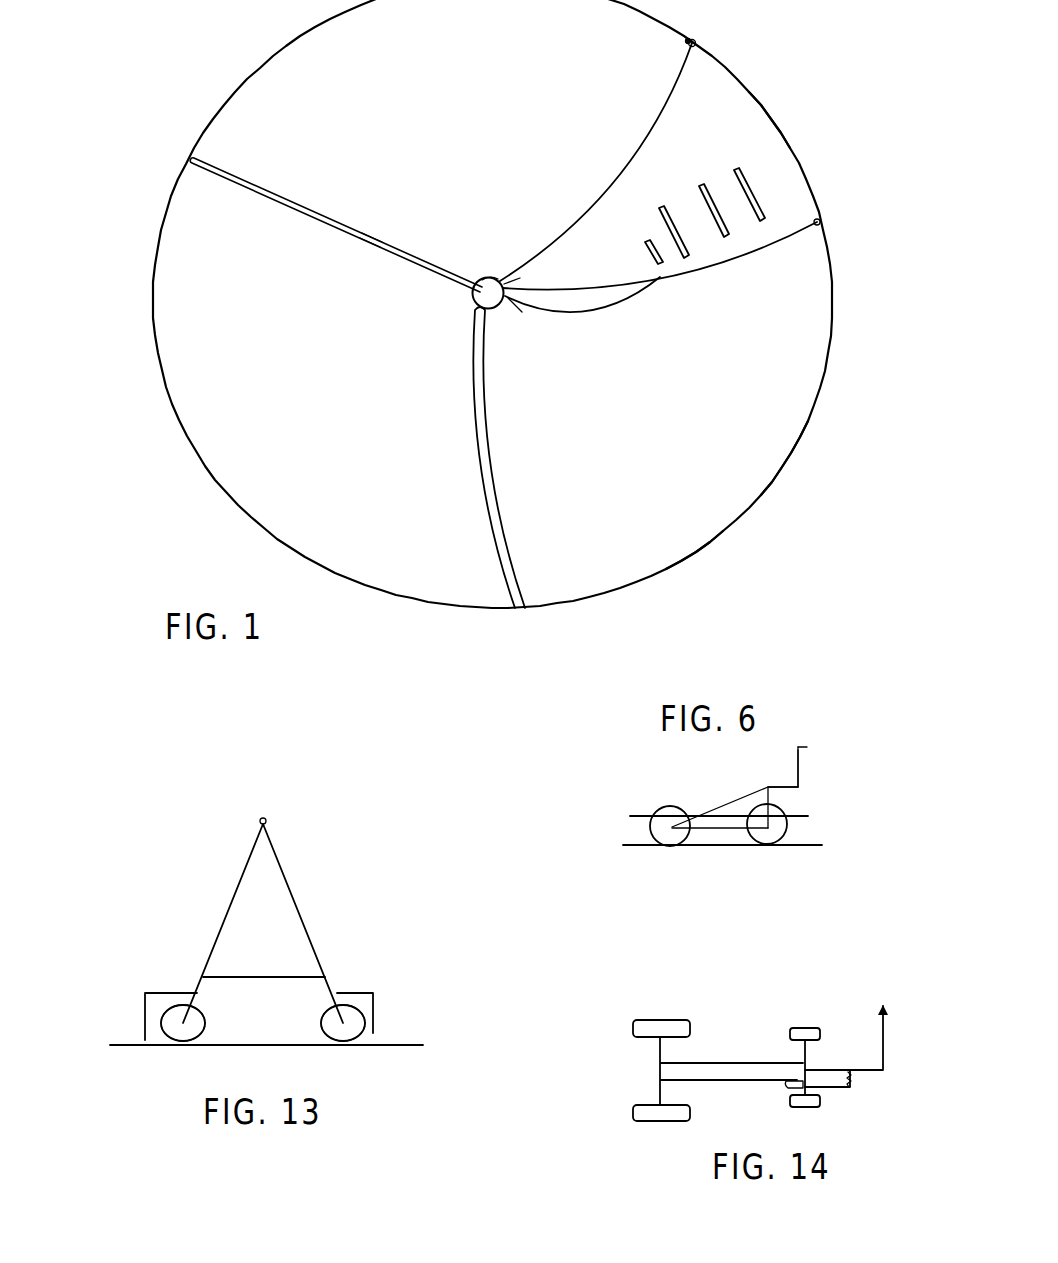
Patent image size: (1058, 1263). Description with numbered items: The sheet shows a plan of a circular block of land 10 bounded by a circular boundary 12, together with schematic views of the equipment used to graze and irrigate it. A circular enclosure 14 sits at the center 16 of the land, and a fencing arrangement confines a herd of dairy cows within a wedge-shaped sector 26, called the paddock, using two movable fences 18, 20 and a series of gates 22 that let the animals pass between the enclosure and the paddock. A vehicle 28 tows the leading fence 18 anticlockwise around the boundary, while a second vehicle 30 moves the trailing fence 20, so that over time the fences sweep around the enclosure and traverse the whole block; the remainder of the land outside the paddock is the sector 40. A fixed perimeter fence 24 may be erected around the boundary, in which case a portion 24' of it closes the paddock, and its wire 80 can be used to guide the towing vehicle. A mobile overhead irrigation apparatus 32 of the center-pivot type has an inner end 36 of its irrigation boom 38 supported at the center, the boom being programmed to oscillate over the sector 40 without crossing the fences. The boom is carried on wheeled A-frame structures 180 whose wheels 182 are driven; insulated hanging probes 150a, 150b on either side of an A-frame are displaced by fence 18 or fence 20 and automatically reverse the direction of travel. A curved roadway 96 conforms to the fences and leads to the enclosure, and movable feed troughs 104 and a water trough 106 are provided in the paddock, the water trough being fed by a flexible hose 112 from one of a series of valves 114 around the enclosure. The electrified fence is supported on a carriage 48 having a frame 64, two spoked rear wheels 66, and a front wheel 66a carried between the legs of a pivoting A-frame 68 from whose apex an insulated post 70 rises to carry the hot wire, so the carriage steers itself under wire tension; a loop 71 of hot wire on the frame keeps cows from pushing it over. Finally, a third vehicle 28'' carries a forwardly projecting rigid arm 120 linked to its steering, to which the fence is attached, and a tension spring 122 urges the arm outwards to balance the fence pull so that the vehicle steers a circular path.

In FIG. 1, the block of land 10 is at (168, 443).
In FIG. 1, the circular boundary 12 is at (829, 355).
In FIG. 1, the circular enclosure 14 is at (471, 297).
In FIG. 1, the center 16 is at (492, 278).
In FIG. 1, the first movable fence 18 is at (631, 159).
In FIG. 6, the first movable fence 18 is at (807, 743).
In FIG. 13, the first movable fence 18 is at (128, 1024).
In FIG. 14, the first movable fence 18 is at (886, 1038).
In FIG. 1, the second movable fence 20 is at (700, 270).
In FIG. 6, the second movable fence 20 is at (783, 768).
In FIG. 13, the second movable fence 20 is at (263, 1023).
In FIG. 1, the gates 22 is at (520, 278).
In FIG. 1, the fixed perimeter fence 24 is at (795, 462).
In FIG. 1, the portion of the perimeter fence 24' is at (793, 120).
In FIG. 1, the sector (paddock) 26 is at (724, 156).
In FIG. 1, the vehicle 28 is at (717, 34).
In FIG. 14, the vehicle 28'' is at (726, 1053).
In FIG. 1, the second vehicle 30 is at (821, 222).
In FIG. 1, the mobile overhead irrigation apparatus 32 is at (370, 248).
In FIG. 1, the inner end of irrigation boom 36 is at (478, 283).
In FIG. 1, the irrigation boom 38 is at (370, 238).
In FIG. 1, the sector 40 is at (655, 426).
In FIG. 6, the carriage 48 is at (658, 856).
In FIG. 6, the frame 64 is at (717, 830).
In FIG. 6, the spoked wheels 66 is at (653, 826).
In FIG. 6, the front wheel 66a is at (778, 833).
In FIG. 6, the A-frame 68 is at (790, 788).
In FIG. 6, the post 70 is at (798, 771).
In FIG. 6, the loop of hot wire 71 is at (640, 816).
In FIG. 1, the wire 80 is at (692, 556).
In FIG. 1, the roadway 96 is at (490, 466).
In FIG. 1, the movable feed troughs 104 is at (749, 190).
In FIG. 1, the water trough 106 is at (650, 243).
In FIG. 1, the flexible hose 112 is at (592, 320).
In FIG. 1, the valves 114 is at (520, 327).
In FIG. 14, the rigid arm 120 is at (834, 1068).
In FIG. 14, the tension spring 122 is at (852, 1079).
In FIG. 13, the insulated hanging probe 150a is at (143, 1002).
In FIG. 13, the insulated hanging probe 150b is at (390, 1002).
In FIG. 13, the A-frame structure 180 is at (292, 888).
In FIG. 13, the wheels 182 is at (338, 1006).